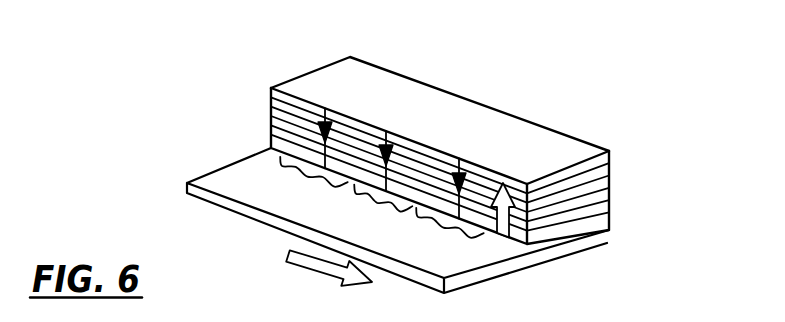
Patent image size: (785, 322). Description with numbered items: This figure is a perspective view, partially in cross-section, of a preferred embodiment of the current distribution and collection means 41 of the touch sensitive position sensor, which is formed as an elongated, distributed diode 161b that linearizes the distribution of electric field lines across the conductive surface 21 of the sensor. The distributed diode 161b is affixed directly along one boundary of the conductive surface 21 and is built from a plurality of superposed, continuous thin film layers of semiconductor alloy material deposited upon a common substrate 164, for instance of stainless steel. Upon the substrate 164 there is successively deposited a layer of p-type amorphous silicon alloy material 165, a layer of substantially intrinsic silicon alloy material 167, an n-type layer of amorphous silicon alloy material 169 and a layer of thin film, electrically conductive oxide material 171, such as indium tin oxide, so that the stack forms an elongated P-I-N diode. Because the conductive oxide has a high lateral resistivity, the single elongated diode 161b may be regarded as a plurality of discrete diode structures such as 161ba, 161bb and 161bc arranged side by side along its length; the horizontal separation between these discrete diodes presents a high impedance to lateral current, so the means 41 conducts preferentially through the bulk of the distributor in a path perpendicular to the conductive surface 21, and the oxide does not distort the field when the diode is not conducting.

The current distribution and collection means 41 is at (282, 78).
The elongated distributed diode 161b is at (494, 157).
The discrete diode structure 161ba is at (305, 205).
The discrete diode structure 161bb is at (383, 232).
The discrete diode structure 161bc is at (457, 262).
The substrate 164 is at (612, 152).
The layer of p-type amorphous silicon alloy material 165 is at (612, 163).
The layer of substantially intrinsic silicon alloy material 167 is at (612, 175).
The n-type layer of amorphous silicon alloy material 169 is at (612, 192).
The layer of thin film electrically conductive oxide material 171 is at (612, 208).
The conductive surface 21 is at (572, 233).